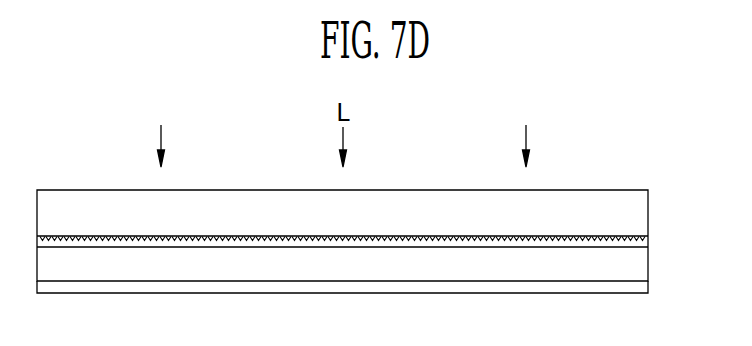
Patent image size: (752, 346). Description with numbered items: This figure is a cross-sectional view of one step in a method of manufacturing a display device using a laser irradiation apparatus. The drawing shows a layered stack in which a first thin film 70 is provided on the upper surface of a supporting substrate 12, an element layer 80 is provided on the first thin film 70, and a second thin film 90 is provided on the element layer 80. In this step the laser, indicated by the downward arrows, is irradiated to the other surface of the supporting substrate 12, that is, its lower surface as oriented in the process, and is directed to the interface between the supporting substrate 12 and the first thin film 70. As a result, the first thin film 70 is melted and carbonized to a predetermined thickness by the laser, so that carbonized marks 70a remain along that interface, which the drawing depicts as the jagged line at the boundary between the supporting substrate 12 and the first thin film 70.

The supporting substrate 12 is at (650, 211).
The first thin film 70 is at (650, 244).
The carbonized marks 70a is at (605, 236).
The element layer 80 is at (650, 265).
The second thin film 90 is at (650, 285).